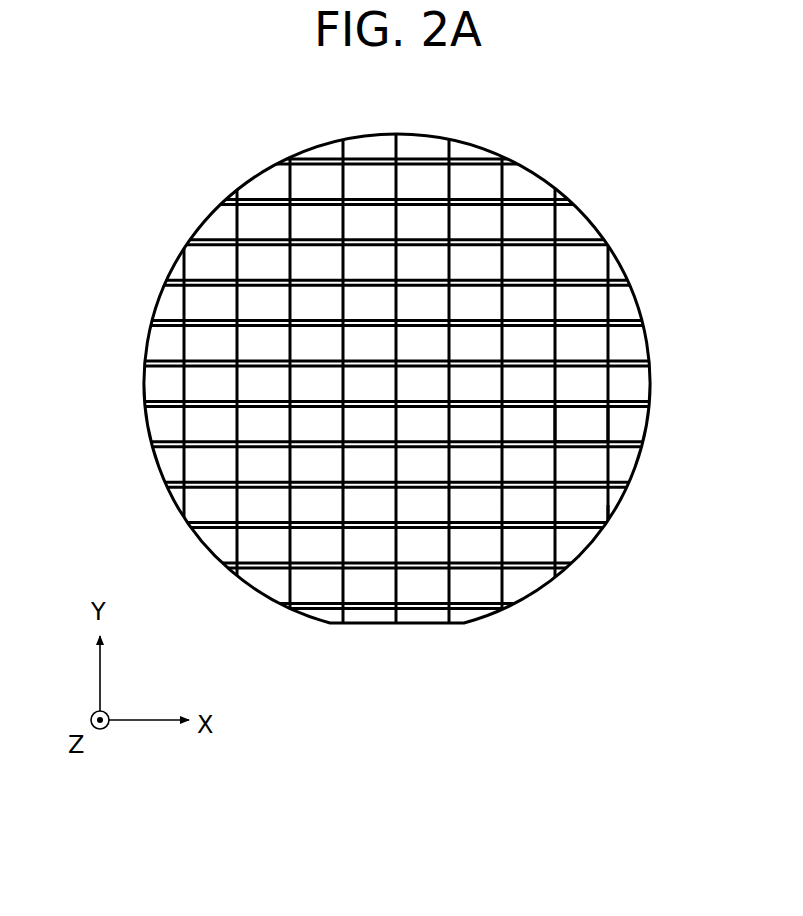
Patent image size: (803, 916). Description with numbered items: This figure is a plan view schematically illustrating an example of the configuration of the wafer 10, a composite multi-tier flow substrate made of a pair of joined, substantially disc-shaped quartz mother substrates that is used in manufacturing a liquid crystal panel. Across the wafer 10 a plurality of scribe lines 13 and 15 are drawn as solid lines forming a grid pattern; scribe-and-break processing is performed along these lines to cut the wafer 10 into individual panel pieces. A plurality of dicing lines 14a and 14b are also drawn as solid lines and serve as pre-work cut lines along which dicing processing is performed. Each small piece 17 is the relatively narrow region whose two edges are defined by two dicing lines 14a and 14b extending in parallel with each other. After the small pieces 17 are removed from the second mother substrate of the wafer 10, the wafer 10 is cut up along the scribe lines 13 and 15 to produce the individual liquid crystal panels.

The wafer 10 is at (565, 133).
The scribe line 13 is at (569, 288).
The dicing line 14a is at (476, 385).
The dicing line 14b is at (400, 381).
The scribe line 15 is at (610, 424).
The small piece 17 is at (605, 523).